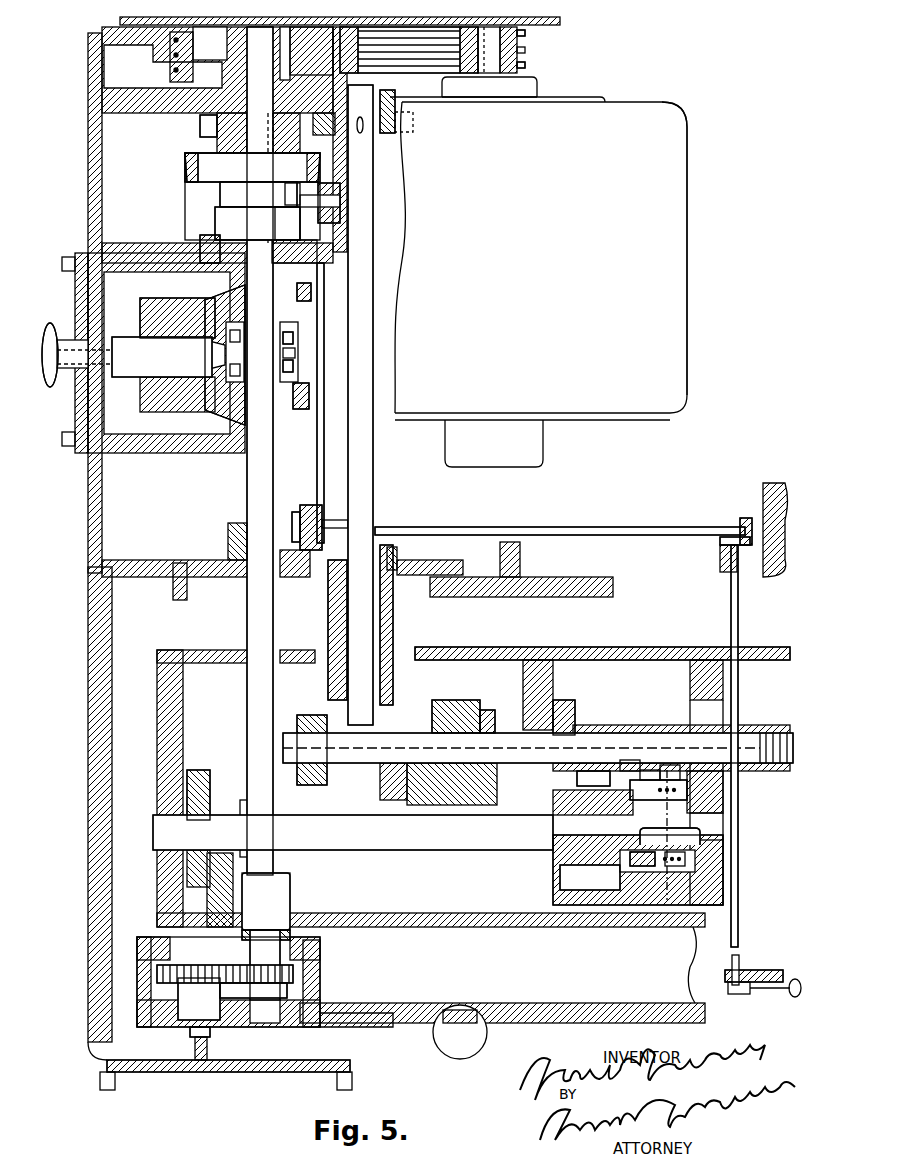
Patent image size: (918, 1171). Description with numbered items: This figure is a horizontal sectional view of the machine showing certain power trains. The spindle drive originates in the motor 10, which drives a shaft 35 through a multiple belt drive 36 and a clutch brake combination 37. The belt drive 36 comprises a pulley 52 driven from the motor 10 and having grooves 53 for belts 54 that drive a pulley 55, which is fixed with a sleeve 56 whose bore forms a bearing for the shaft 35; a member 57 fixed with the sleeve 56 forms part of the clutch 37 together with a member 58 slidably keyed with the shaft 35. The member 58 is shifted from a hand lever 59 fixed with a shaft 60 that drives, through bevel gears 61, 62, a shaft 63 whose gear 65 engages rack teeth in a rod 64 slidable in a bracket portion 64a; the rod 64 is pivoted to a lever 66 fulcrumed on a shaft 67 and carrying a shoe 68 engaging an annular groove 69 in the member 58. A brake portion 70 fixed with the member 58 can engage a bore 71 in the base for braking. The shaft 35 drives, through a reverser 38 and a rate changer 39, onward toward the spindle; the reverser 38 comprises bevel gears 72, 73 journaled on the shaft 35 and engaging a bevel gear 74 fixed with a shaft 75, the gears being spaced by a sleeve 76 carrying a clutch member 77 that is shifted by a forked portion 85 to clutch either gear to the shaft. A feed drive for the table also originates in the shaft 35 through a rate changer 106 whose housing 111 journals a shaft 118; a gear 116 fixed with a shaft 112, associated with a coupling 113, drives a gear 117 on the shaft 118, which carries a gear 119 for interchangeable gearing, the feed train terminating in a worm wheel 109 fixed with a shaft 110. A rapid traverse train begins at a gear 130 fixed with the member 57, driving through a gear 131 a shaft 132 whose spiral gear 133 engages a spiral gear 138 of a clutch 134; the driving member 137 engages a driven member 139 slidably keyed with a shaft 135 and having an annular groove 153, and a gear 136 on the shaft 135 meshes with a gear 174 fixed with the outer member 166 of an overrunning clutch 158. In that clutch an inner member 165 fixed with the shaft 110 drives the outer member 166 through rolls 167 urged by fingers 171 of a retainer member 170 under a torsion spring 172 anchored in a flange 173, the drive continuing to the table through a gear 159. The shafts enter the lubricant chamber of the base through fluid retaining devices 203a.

The motor 10 is at (614, 104).
The shaft 35 is at (252, 458).
The multiple belt drive 36 is at (443, 80).
The clutch brake combination 37 is at (188, 205).
The reverser 38 is at (195, 407).
The rate changer 39 is at (92, 406).
The pulley 52 is at (525, 63).
The grooves 53 is at (525, 32).
The belts 54 is at (397, 45).
The pulley 55 is at (180, 68).
The sleeve 56 is at (290, 69).
The clutch member 57 is at (187, 158).
The clutch member 58 is at (187, 182).
The hand lever 59 is at (740, 986).
The shaft 60 is at (750, 870).
The bevel gear 61 is at (715, 540).
The bevel gear 62 is at (740, 515).
The shaft 63 is at (602, 525).
The rod 64 is at (323, 441).
The bracket portion 64a is at (313, 505).
The gear 65 is at (333, 510).
The lever 66 is at (312, 168).
The shaft 67 is at (322, 187).
The shoe 68 is at (290, 222).
The annular groove 69 is at (220, 198).
The brake portion 70 is at (215, 223).
The bore 71 is at (210, 250).
The bevel gear 72 is at (309, 393).
The bevel gear 73 is at (307, 291).
The bevel gear 74 is at (242, 424).
The shaft 75 is at (158, 359).
The sleeve 76 is at (291, 369).
The clutch member 77 is at (292, 330).
The forked portion 85 is at (297, 353).
The rate changer 106 is at (228, 1042).
The worm wheel 109 is at (198, 767).
The shaft 110 is at (435, 838).
The housing 111 is at (318, 982).
The shaft 112 is at (280, 955).
The coupling 113 is at (290, 925).
The gear 116 is at (288, 982).
The gear 117 is at (155, 975).
The shaft 118 is at (205, 1022).
The gear 119 is at (215, 1055).
The gear 130 is at (200, 120).
The gear 131 is at (387, 132).
The shaft 132 is at (370, 330).
The spiral gear 133 is at (400, 696).
The clutch 134 is at (380, 665).
The shaft 135 is at (508, 740).
The gear 136 is at (565, 721).
The driving member 137 is at (440, 711).
The spiral gear 138 is at (356, 775).
The driven member 139 is at (467, 698).
The annular groove 153 is at (487, 710).
The overrunning clutch 158 is at (598, 878).
The gear 159 is at (640, 880).
The inner member 165 is at (675, 856).
The outer member 166 is at (610, 780).
The rolls 167 is at (680, 870).
The cage or retainer member 170 is at (660, 770).
The fingers 171 is at (636, 763).
The torsion spring 172 is at (677, 773).
The flange 173 is at (682, 780).
The gear 174 is at (565, 868).
The fluid retaining devices 203a is at (230, 533).